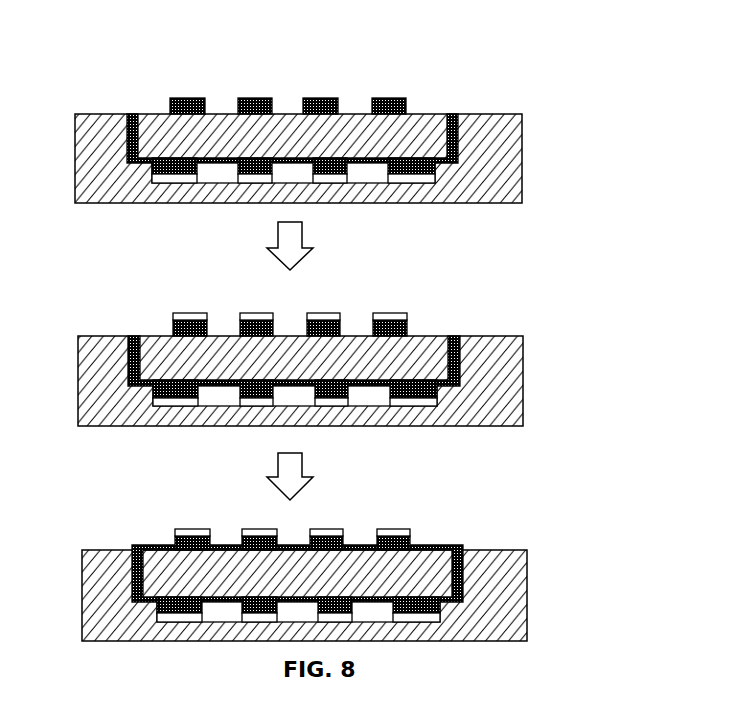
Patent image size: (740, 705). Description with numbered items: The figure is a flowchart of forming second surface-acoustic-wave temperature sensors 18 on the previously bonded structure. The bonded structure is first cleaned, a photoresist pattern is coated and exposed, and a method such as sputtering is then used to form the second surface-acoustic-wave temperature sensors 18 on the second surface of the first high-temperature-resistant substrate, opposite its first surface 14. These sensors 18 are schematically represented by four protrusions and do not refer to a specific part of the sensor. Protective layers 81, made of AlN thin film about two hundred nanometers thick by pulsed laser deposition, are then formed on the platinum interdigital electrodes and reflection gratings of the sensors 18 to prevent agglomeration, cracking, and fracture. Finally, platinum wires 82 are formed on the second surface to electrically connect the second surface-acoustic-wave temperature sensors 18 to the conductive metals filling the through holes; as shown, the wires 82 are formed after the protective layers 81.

The first surface 14 is at (478, 113).
The second surface-acoustic-wave temperature sensors 18 is at (313, 126).
The protective layers 81 is at (323, 315).
The wires 82 is at (428, 546).